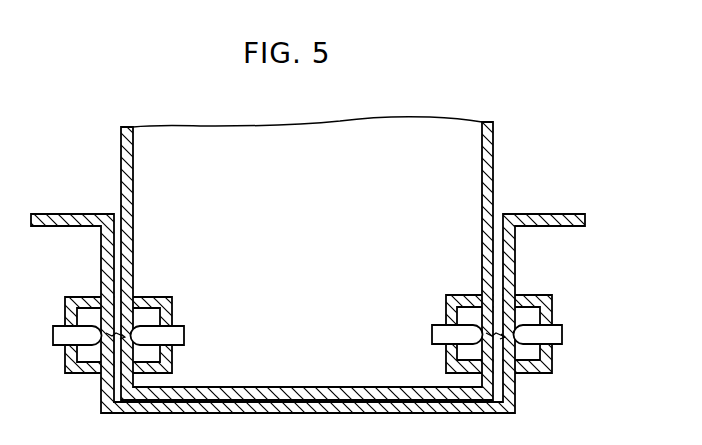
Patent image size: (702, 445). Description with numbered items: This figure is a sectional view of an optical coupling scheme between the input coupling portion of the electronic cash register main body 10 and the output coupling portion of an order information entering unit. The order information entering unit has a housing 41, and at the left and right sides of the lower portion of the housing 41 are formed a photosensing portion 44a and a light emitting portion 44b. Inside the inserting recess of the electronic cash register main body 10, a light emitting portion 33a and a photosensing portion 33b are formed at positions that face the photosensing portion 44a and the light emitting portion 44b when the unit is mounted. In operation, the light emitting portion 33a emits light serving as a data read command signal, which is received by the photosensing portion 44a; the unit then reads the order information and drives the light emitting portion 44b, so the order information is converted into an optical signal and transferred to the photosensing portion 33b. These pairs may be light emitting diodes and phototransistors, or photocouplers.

The electronic cash register main body 10 is at (70, 237).
The housing 41 is at (431, 140).
The light emitting portion 33a is at (55, 349).
The photosensing portion 33b is at (559, 346).
The photosensing portion 44a is at (178, 331).
The light emitting portion 44b is at (432, 328).